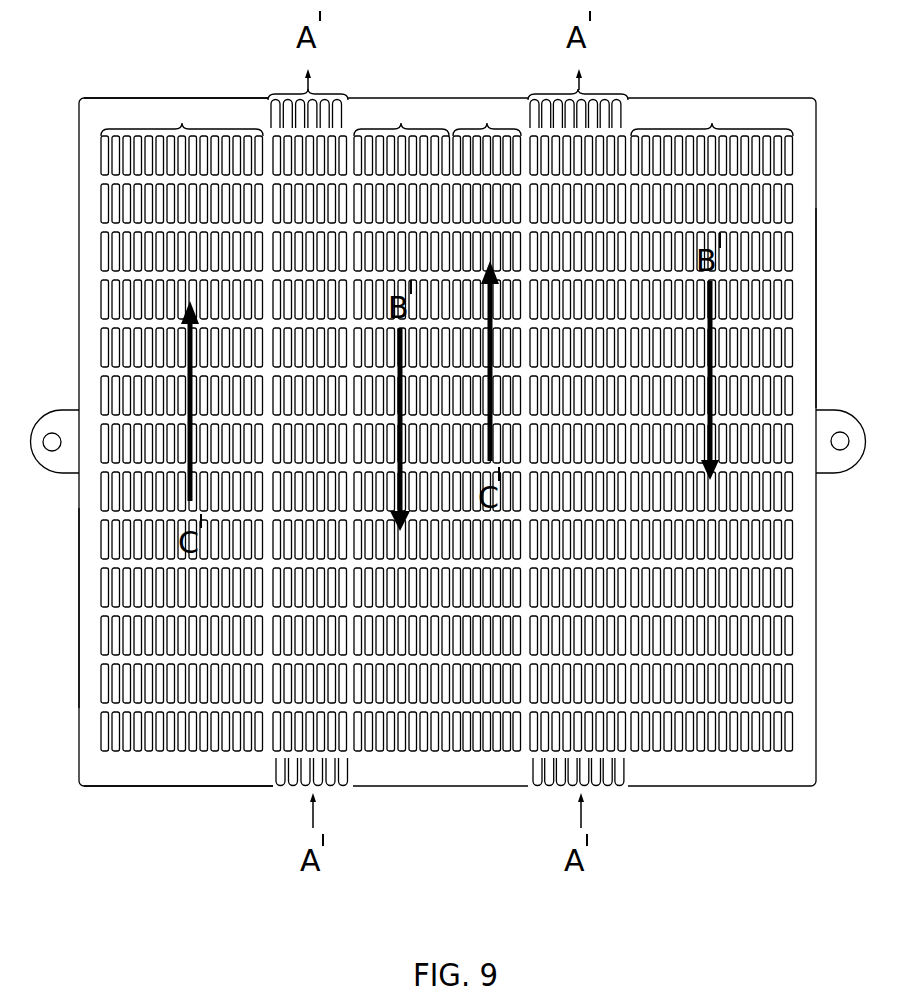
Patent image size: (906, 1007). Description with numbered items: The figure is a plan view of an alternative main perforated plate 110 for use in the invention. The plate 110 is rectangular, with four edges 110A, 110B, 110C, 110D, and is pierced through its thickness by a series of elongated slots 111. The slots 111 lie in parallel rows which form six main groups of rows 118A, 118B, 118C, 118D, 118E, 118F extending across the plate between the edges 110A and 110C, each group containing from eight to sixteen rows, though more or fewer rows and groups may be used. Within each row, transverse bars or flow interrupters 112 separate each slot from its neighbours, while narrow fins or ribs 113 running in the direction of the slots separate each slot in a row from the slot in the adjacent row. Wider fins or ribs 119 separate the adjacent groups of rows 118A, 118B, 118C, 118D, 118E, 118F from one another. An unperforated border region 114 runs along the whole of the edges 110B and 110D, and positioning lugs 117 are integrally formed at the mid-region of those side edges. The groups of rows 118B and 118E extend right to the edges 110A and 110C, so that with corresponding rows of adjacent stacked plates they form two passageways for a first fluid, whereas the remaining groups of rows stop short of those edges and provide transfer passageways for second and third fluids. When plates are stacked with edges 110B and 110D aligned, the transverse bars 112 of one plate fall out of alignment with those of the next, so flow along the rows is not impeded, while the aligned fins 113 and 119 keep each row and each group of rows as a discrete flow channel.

The main perforated plate 110 is at (847, 250).
The edge 110A is at (167, 780).
The edge 110B is at (72, 572).
The edge 110C is at (203, 90).
The edge 110D is at (810, 330).
The elongated slot 111 is at (785, 152).
The transverse bar 112 is at (773, 223).
The narrow fin 113 is at (655, 138).
The unperforated border region 114 is at (78, 347).
The positioning lug 117 is at (60, 448).
The group of rows 118A is at (172, 116).
The group of rows 118B is at (298, 82).
The group of rows 118C is at (393, 116).
The group of rows 118D is at (478, 116).
The group of rows 118E is at (568, 82).
The group of rows 118F is at (704, 116).
The wider fin 119 is at (342, 135).